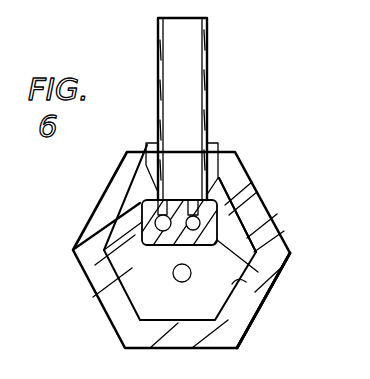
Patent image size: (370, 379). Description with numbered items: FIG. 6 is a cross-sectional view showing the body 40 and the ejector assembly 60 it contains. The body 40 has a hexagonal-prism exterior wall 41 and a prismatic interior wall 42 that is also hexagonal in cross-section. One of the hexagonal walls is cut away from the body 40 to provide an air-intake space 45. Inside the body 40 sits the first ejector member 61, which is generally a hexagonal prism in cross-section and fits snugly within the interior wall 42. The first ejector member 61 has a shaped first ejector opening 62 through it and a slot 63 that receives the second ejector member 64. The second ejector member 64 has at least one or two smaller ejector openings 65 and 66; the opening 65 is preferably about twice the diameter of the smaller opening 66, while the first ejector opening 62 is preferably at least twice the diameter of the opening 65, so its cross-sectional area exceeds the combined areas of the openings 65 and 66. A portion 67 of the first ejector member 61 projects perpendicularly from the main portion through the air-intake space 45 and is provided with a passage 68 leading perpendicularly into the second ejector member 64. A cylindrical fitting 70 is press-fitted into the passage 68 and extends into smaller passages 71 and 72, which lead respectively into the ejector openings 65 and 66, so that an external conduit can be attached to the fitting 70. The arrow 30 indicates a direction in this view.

The direction of insertion arrow 30 is at (266, 168).
The body 40 is at (270, 216).
The hexagonal-prism exterior wall 41 is at (292, 247).
The prismatic interior wall 42 is at (246, 282).
The air-intake space 45 is at (229, 228).
The ejector assembly 60 is at (258, 222).
The first ejector member 61 is at (131, 273).
The first ejector opening 62 is at (246, 323).
The slot 63 is at (142, 197).
The second ejector member 64 is at (137, 203).
The ejector opening 65 is at (104, 250).
The ejector opening 66 is at (258, 252).
The portion 67 is at (148, 143).
The passage 68 is at (212, 143).
The cylindrical fitting 70 is at (208, 72).
The smaller passage 71 is at (162, 200).
The smaller passage 72 is at (165, 202).